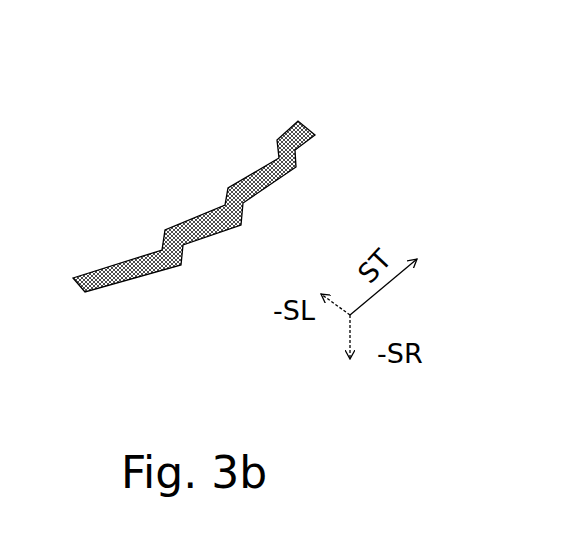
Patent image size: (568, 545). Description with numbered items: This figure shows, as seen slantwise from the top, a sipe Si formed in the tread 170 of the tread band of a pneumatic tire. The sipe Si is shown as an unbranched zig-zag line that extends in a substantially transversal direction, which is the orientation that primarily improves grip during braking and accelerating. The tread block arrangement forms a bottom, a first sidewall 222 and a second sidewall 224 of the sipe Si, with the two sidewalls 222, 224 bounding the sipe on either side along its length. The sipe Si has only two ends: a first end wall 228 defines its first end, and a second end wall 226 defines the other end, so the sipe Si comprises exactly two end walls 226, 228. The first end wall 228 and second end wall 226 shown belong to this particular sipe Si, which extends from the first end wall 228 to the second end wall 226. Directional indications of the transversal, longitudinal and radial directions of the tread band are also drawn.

The tread 170 is at (142, 244).
The first sidewall 222 is at (253, 171).
The second sidewall 224 is at (241, 223).
The second end wall 226 is at (311, 134).
The first end wall 228 is at (108, 290).
The sipe Si is at (206, 230).